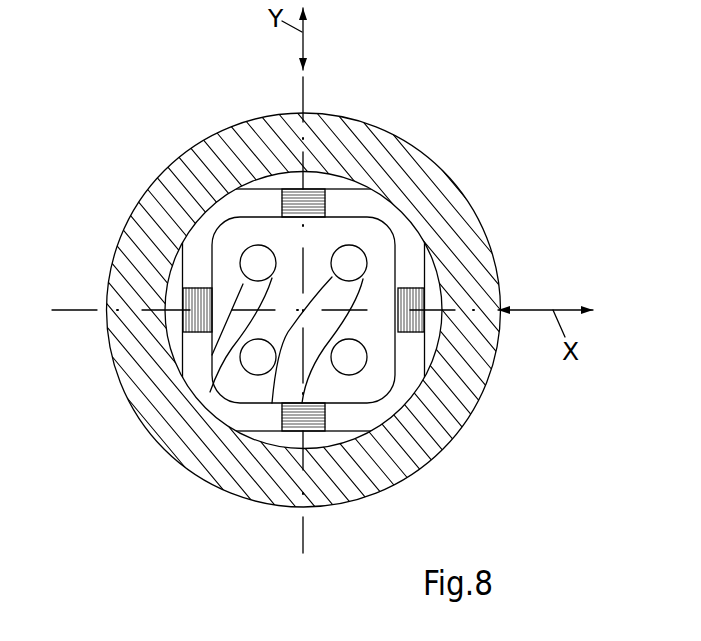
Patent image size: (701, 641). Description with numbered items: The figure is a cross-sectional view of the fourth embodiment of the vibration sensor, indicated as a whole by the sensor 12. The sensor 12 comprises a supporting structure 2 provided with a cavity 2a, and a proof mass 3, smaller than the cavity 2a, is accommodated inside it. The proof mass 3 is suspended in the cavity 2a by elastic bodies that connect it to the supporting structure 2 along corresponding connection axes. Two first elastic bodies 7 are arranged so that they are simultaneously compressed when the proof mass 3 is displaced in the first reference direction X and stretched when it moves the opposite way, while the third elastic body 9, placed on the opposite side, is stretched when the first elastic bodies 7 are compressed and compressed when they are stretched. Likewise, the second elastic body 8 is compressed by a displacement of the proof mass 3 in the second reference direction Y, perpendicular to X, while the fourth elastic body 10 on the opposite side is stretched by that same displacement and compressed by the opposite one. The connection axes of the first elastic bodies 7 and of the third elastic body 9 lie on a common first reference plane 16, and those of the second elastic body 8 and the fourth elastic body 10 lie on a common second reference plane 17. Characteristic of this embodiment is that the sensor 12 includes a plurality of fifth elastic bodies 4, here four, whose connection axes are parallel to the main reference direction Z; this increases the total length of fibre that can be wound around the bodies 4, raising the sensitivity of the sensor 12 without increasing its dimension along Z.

The supporting structure 2 is at (408, 440).
The cavity 2a is at (407, 208).
The proof mass 3 is at (233, 215).
The fifth elastic body 4 is at (344, 283).
The first elastic body 7 is at (424, 327).
The second elastic body 8 is at (320, 430).
The third elastic body 9 is at (182, 326).
The fourth elastic body 10 is at (320, 190).
The sensor 12 is at (503, 190).
The first reference plane 16 is at (78, 308).
The second reference plane 17 is at (303, 93).